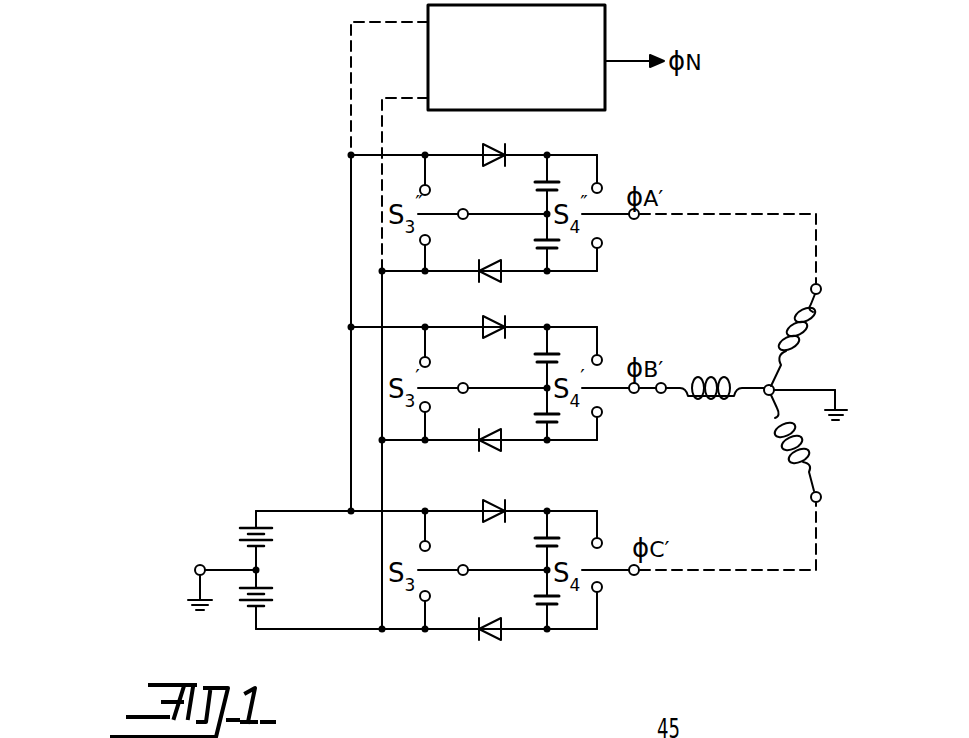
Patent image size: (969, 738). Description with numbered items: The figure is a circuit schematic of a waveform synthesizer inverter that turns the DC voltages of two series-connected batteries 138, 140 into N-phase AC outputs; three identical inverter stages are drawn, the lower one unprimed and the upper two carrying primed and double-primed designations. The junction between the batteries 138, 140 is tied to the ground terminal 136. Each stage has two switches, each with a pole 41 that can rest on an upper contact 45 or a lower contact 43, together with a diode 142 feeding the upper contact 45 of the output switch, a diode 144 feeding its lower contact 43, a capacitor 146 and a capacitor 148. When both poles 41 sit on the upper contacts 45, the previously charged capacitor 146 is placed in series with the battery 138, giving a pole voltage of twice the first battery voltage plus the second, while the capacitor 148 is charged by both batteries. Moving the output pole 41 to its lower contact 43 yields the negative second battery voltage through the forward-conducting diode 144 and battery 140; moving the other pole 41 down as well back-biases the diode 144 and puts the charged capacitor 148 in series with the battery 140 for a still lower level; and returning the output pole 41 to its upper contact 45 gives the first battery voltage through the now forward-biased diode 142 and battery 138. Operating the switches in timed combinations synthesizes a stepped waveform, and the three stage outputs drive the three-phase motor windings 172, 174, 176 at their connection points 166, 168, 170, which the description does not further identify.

The ground terminal 136 is at (194, 566).
The battery 138 is at (240, 540).
The battery 140 is at (240, 600).
The diode 142 is at (507, 150).
The diode 144 is at (481, 276).
The capacitor 146 is at (560, 185).
The capacitor 148 is at (538, 244).
The pole 41 is at (467, 210).
The lower contact 43 is at (430, 242).
The upper contact 45 is at (430, 188).
The motor winding terminal 166 is at (820, 285).
The motor winding terminal 168 is at (661, 394).
The motor winding terminal 170 is at (811, 500).
The motor winding 172 is at (782, 328).
The motor winding 174 is at (713, 376).
The motor winding 176 is at (782, 453).